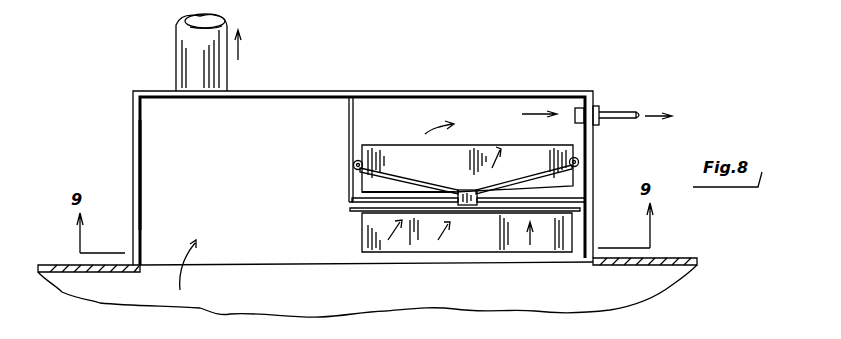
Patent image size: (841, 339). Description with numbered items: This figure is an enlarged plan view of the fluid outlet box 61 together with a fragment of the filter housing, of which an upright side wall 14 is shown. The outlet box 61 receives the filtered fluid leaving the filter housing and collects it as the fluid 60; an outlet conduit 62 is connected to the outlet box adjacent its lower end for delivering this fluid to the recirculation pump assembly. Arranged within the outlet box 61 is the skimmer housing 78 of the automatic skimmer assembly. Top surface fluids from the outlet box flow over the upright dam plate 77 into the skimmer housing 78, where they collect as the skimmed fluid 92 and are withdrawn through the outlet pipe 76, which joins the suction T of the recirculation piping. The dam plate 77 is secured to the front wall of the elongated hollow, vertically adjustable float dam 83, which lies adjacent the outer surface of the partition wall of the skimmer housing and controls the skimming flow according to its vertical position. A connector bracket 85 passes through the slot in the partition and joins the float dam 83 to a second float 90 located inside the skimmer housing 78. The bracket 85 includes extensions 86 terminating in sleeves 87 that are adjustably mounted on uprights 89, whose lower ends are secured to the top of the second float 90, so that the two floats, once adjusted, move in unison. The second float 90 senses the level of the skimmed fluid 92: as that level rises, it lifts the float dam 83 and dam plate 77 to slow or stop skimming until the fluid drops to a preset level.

The upright side wall 14 is at (60, 265).
The collected fluid 60 is at (168, 136).
The outlet box 61 is at (135, 172).
The outlet conduit 62 is at (177, 50).
The outlet pipe 76 is at (612, 112).
The dam plate 77 is at (385, 212).
The skimmer housing 78 is at (348, 120).
The float dam 83 is at (530, 242).
The connector bracket 85 is at (468, 206).
The extensions 86 is at (406, 180).
The sleeves 87 is at (353, 163).
The uprights 89 is at (358, 172).
The second float 90 is at (540, 156).
The skimmed fluid 92 is at (466, 116).